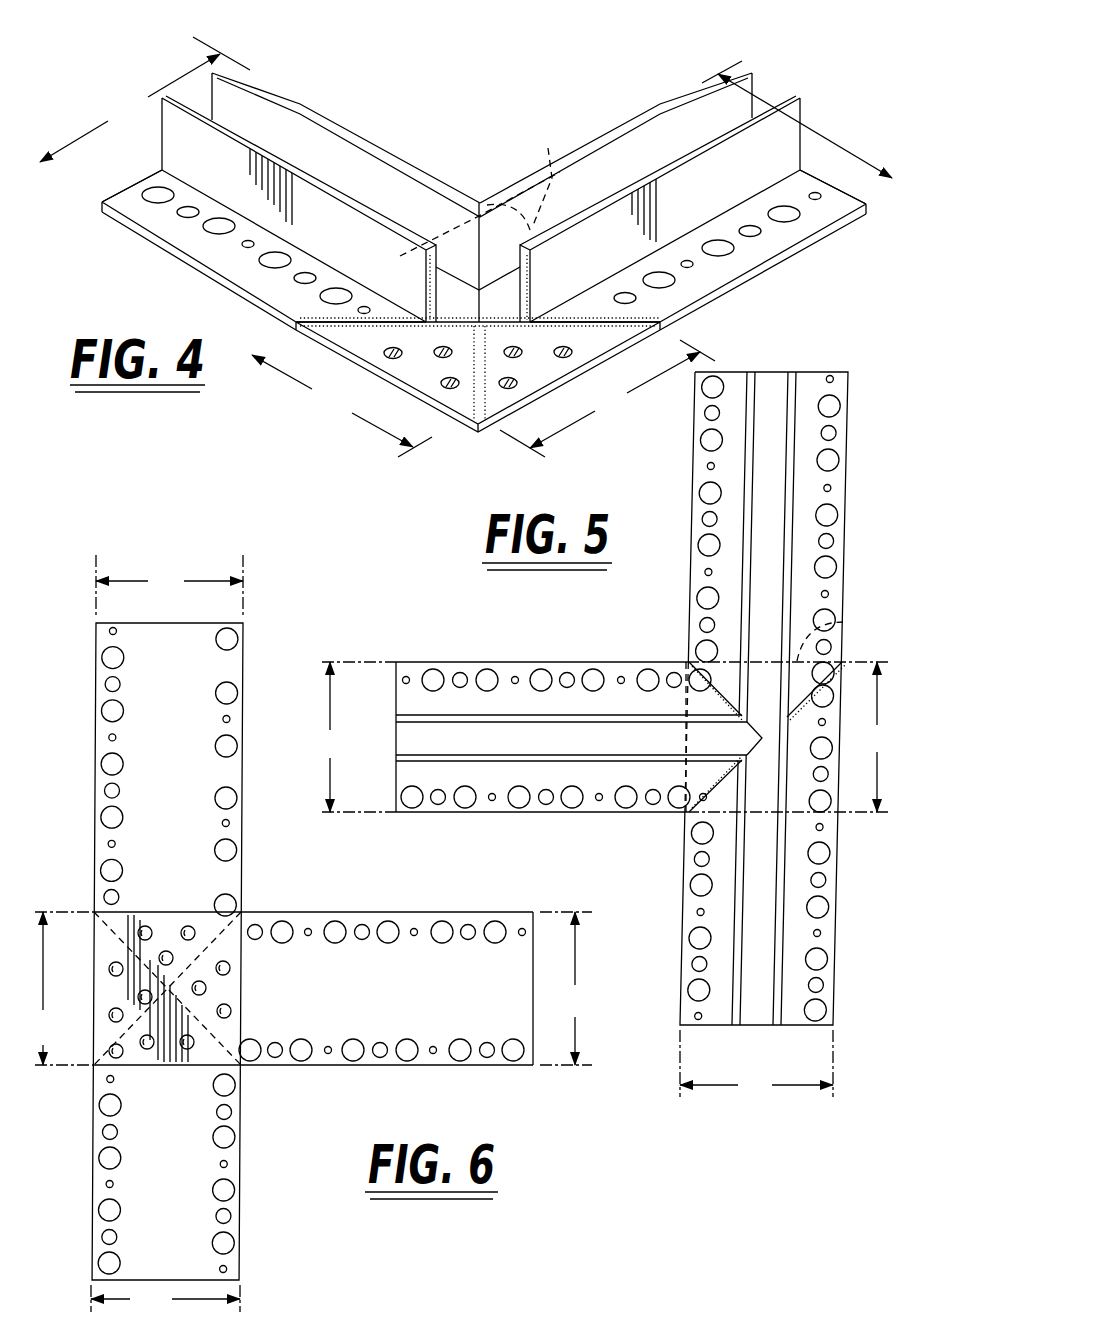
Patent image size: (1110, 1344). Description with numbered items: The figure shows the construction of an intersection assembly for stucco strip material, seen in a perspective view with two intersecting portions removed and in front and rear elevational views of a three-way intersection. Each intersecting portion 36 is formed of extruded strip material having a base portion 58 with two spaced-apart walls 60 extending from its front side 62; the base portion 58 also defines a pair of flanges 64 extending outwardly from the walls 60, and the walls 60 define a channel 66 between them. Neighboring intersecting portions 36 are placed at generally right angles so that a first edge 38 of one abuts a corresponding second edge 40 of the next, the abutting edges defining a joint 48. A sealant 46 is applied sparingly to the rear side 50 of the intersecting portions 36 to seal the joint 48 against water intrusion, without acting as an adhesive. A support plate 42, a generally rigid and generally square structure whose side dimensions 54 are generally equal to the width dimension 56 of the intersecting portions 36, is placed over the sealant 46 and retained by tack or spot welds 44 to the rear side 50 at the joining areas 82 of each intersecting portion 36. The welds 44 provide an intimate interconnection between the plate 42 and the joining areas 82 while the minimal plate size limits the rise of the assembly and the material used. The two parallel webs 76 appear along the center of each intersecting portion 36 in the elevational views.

In FIG. 4, the intersecting portions 36 is at (478, 181).
In FIG. 5, the intersecting portions 36 is at (618, 700).
In FIG. 6, the intersecting portions 36 is at (309, 935).
In FIG. 4, the first edge 38 is at (592, 330).
In FIG. 4, the second edge 40 is at (479, 300).
In FIG. 4, the support plate 42 is at (549, 165).
In FIG. 5, the support plate 42 is at (832, 639).
In FIG. 4, the welds 44 is at (445, 358).
In FIG. 6, the welds 44 is at (188, 928).
In FIG. 4, the sealant 46 is at (480, 200).
In FIG. 5, the sealant 46 is at (707, 700).
In FIG. 4, the joint 48 is at (478, 270).
In FIG. 5, the joint 48 is at (762, 737).
In FIG. 6, the joint 48 is at (94, 950).
In FIG. 4, the rear side 50 is at (330, 326).
In FIG. 6, the rear side 50 is at (170, 647).
In FIG. 4, the side dimensions 54 is at (483, 398).
In FIG. 5, the side dimensions 54 is at (878, 737).
In FIG. 6, the side dimensions 54 is at (63, 988).
In FIG. 4, the width dimension 56 is at (466, 107).
In FIG. 5, the width dimension 56 is at (575, 879).
In FIG. 6, the width dimension 56 is at (341, 933).
In FIG. 4, the base portion 58 is at (138, 178).
In FIG. 5, the base portion 58 is at (815, 367).
In FIG. 4, the walls 60 is at (173, 143).
In FIG. 5, the walls 60 is at (742, 492).
In FIG. 4, the front side 62 is at (214, 262).
In FIG. 5, the front side 62 is at (723, 520).
In FIG. 6, the front side 62 is at (312, 951).
In FIG. 4, the flanges 64 is at (130, 213).
In FIG. 5, the flanges 64 is at (842, 548).
In FIG. 6, the flanges 64 is at (103, 695).
In FIG. 4, the channel 66 is at (193, 90).
In FIG. 5, the channel 66 is at (768, 393).
In FIG. 4, the second web 76 is at (248, 92).
In FIG. 5, the second web 76 is at (788, 372).
In FIG. 5, the joining areas 82 is at (760, 680).
In FIG. 6, the joining areas 82 is at (132, 912).